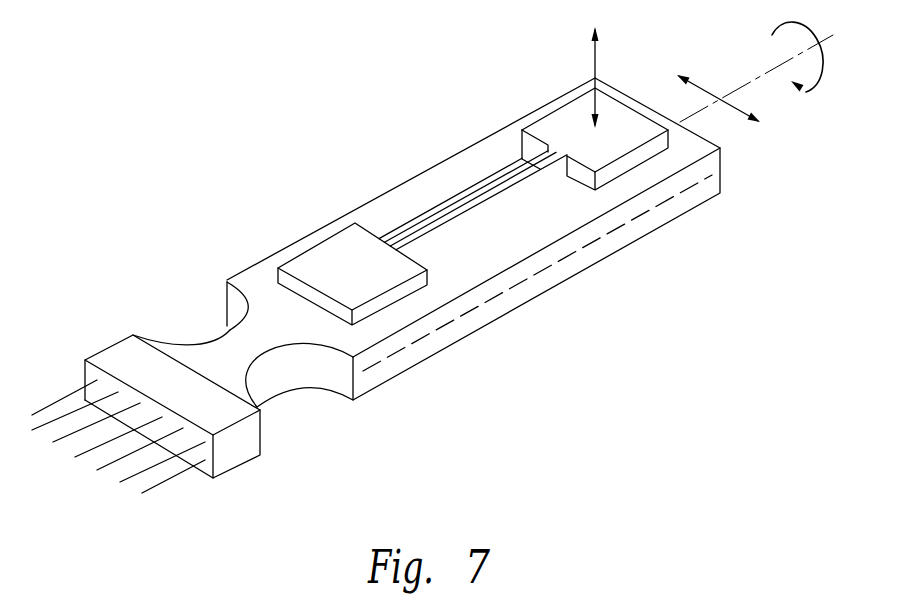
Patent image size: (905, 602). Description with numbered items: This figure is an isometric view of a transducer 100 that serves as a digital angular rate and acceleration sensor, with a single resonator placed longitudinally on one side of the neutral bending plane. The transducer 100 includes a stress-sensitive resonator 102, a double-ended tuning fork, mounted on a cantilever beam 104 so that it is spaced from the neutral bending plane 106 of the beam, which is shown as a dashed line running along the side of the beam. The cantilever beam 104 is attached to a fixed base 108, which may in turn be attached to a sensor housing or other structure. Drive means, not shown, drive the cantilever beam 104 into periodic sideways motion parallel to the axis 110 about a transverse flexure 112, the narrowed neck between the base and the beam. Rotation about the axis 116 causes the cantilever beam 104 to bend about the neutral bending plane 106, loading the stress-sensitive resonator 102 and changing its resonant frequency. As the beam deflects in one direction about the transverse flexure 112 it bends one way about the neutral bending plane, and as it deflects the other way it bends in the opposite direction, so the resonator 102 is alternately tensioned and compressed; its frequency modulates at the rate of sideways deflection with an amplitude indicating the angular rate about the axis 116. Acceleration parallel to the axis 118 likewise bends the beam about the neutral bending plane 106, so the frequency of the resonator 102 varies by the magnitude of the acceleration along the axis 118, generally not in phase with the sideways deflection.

The transducer 100 is at (376, 285).
The stress-sensitive resonator 102 is at (477, 186).
The cantilever beam 104 is at (573, 208).
The neutral bending plane 106 is at (530, 278).
The fixed base 108 is at (167, 372).
The axis 110 is at (703, 90).
The transverse flexure 112 is at (275, 378).
The axis 116 is at (828, 73).
The axis 118 is at (594, 60).